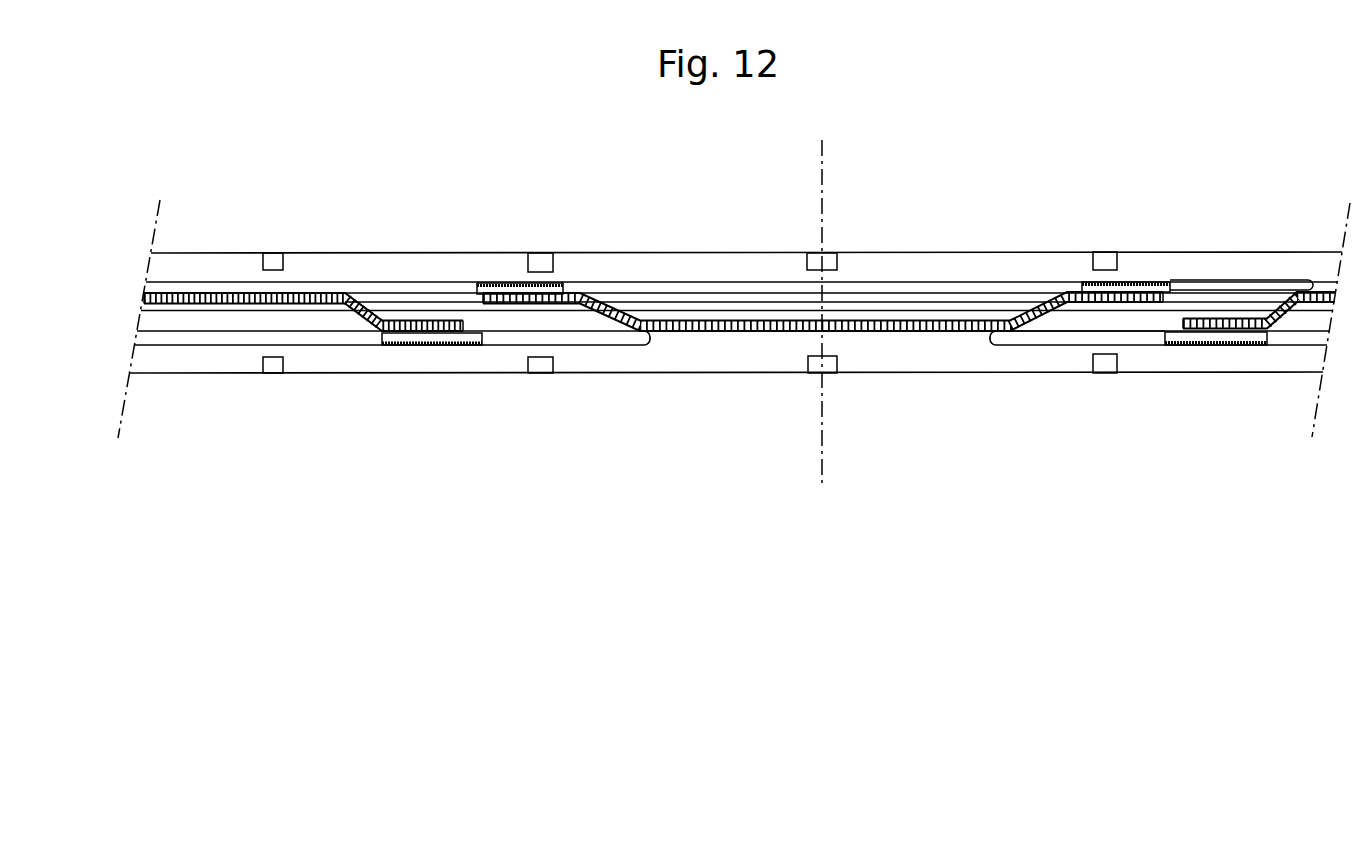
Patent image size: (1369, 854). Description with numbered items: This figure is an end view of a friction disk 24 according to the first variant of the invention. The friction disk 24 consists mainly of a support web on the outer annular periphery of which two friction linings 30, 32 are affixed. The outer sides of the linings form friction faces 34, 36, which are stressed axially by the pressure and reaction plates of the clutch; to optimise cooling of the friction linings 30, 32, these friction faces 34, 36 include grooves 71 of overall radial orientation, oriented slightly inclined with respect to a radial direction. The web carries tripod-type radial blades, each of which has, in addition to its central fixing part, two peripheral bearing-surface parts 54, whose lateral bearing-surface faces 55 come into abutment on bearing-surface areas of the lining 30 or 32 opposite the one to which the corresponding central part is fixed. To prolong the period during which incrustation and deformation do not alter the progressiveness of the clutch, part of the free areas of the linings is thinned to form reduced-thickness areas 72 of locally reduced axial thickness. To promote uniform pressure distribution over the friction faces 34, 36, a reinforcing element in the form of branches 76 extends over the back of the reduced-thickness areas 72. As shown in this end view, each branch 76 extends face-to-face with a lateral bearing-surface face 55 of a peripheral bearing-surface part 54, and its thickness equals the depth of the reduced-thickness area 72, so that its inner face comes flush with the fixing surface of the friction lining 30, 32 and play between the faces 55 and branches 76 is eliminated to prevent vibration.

The friction disk 24 is at (110, 308).
The friction lining 30 is at (315, 263).
The friction lining 32 is at (340, 359).
The friction face 34 is at (684, 252).
The friction face 36 is at (668, 375).
The peripheral bearing-surface part 54 is at (507, 304).
The lateral bearing-surface face 55 is at (507, 300).
The groove 71 is at (830, 254).
The reduced-thickness area 72 is at (770, 285).
The branch 76 is at (478, 283).